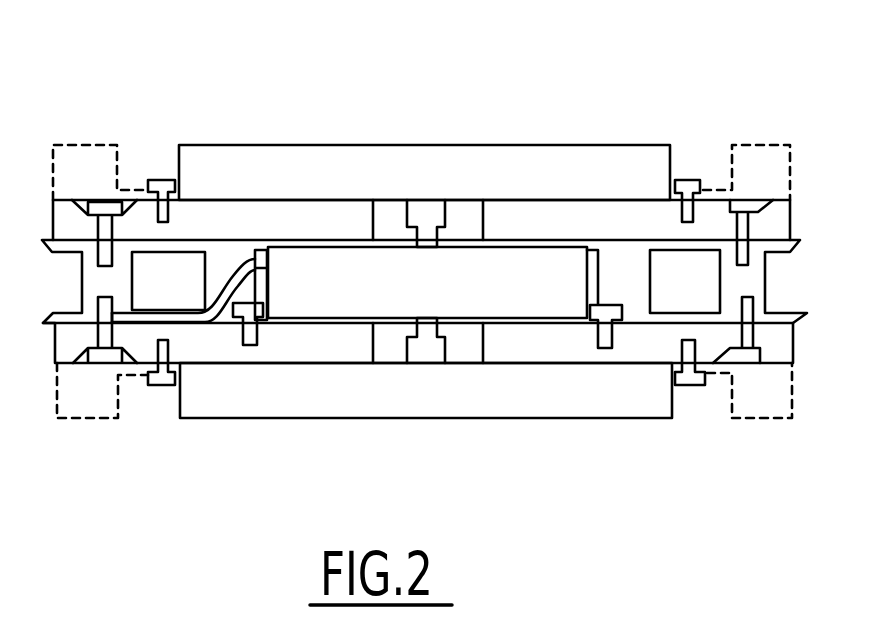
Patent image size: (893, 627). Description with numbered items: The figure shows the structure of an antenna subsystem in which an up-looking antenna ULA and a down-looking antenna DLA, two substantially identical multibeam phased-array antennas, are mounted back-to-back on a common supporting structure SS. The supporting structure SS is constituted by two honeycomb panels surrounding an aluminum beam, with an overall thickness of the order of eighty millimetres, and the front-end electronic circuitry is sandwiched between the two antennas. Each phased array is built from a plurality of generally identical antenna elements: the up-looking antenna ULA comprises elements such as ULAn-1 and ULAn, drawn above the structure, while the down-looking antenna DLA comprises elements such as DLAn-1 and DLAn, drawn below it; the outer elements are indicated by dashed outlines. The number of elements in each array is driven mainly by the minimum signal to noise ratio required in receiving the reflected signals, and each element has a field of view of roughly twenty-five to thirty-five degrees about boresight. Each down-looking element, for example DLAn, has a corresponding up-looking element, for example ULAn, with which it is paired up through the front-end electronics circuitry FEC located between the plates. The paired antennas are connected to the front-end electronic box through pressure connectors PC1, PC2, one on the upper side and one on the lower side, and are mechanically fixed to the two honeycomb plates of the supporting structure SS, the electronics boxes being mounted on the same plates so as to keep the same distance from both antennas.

The supporting structure SS is at (810, 196).
The up-looking antenna ULA is at (683, 93).
The up-looking antenna element n-1 ULAn-1 is at (84, 143).
The up-looking antenna element n ULAn is at (419, 147).
The down-looking antenna DLA is at (645, 502).
The down-looking antenna element n-1 DLAn-1 is at (84, 420).
The down-looking antenna element n DLAn is at (440, 418).
The front-end electronics circuitry FEC is at (360, 272).
The pressure connector PC1 is at (430, 213).
The pressure connector PC2 is at (427, 350).